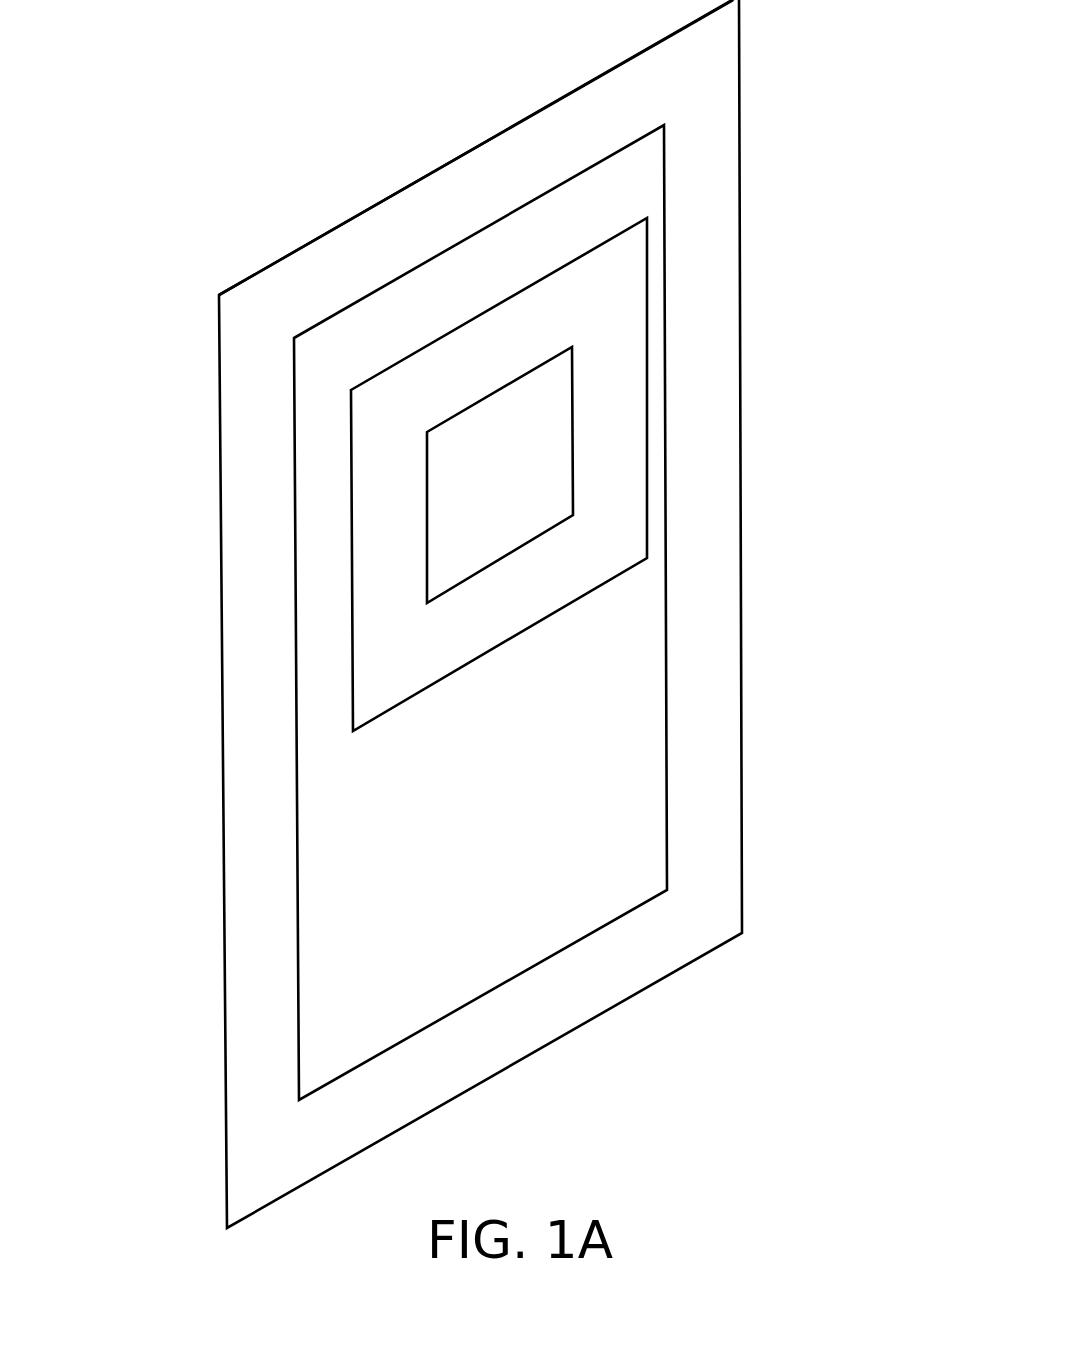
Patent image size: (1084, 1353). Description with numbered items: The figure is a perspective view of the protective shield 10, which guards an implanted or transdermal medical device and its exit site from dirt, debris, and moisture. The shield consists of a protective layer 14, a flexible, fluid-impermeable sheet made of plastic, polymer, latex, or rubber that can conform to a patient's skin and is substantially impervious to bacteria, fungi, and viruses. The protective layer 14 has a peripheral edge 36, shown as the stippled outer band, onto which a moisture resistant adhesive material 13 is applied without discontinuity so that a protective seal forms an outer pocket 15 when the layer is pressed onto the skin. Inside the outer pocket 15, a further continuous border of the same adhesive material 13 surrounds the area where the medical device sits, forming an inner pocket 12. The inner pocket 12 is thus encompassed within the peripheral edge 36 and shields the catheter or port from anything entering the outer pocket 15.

The protective shield 10 is at (273, 152).
The peripheral edge 36 is at (396, 614).
The protective layer 14 is at (476, 147).
The outer pocket 15 is at (595, 612).
The moisture resistant adhesive material 13 is at (473, 494).
The inner pocket 12 is at (653, 442).